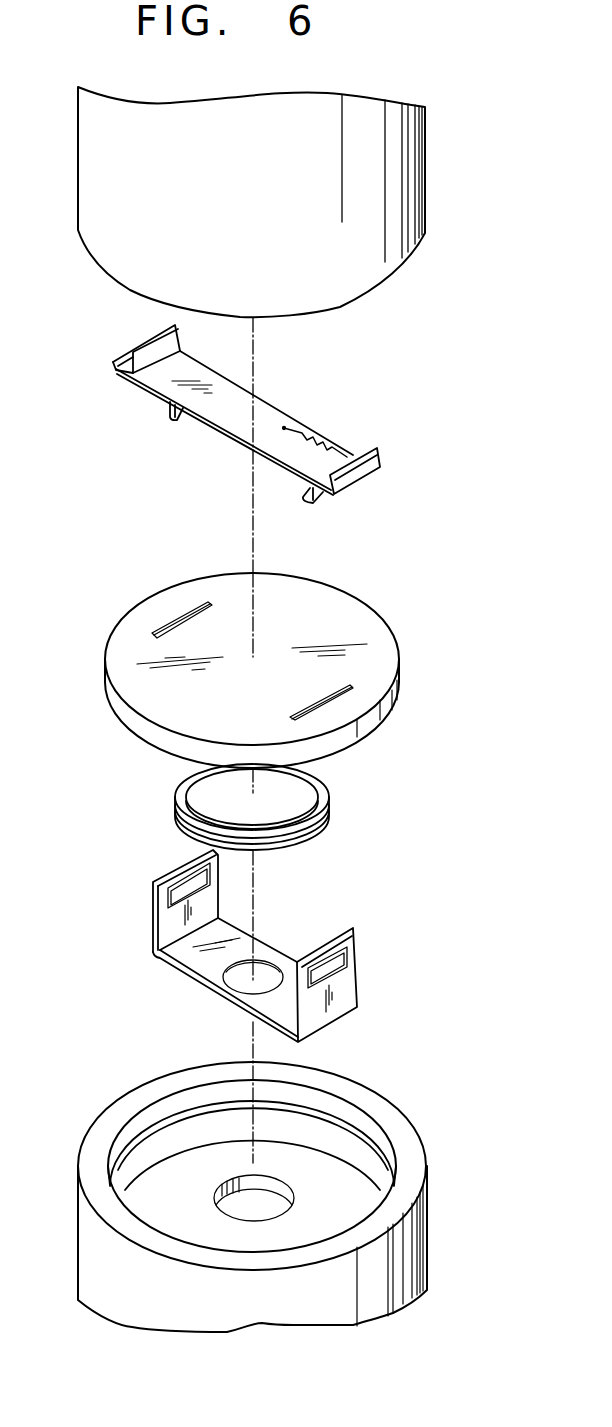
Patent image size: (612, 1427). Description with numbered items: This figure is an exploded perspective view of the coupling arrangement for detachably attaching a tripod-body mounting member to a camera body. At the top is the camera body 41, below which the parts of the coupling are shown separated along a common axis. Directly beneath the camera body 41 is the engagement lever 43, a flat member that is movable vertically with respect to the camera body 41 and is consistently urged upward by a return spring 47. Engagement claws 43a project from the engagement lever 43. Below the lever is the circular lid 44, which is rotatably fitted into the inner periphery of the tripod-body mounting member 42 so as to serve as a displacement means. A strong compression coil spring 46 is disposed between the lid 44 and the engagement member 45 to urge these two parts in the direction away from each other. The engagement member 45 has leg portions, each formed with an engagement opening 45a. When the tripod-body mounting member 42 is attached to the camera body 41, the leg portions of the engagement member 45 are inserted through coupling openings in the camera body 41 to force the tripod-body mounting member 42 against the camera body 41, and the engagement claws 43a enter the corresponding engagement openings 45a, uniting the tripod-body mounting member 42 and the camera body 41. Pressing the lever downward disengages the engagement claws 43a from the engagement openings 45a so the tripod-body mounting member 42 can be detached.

The camera body 41 is at (395, 219).
The tripod-body mounting member 42 is at (408, 1245).
The engagement lever 43 is at (158, 377).
The engagement claws 43a is at (172, 420).
The lid 44 is at (360, 627).
The engagement member 45 is at (195, 960).
The engagement openings 45a is at (187, 883).
The compression coil spring 46 is at (330, 795).
The return spring 47 is at (303, 422).